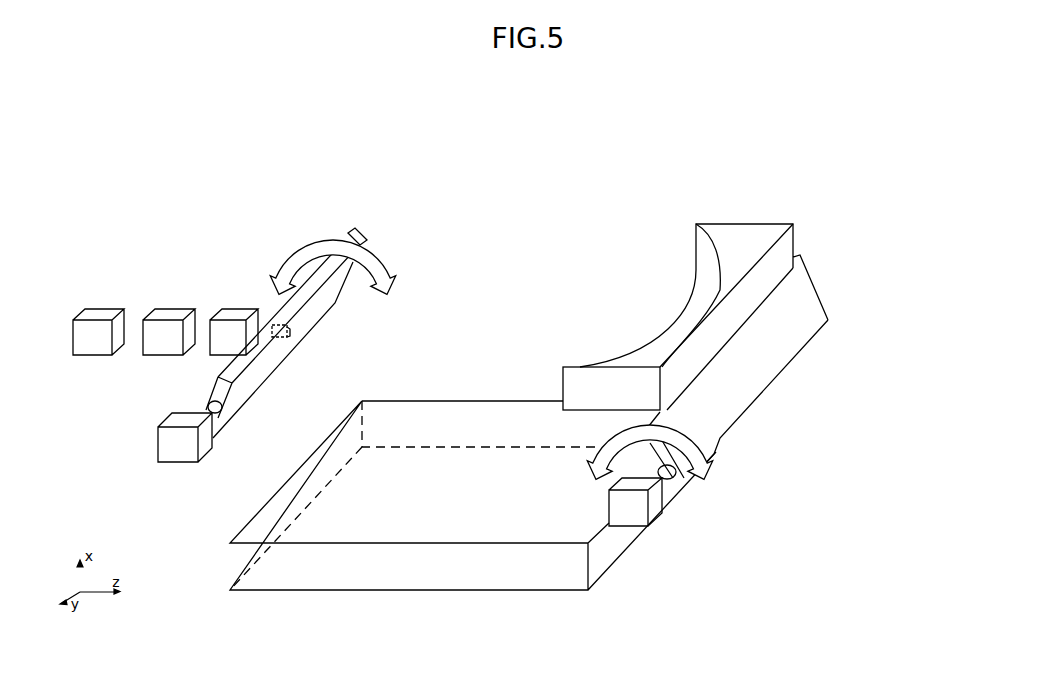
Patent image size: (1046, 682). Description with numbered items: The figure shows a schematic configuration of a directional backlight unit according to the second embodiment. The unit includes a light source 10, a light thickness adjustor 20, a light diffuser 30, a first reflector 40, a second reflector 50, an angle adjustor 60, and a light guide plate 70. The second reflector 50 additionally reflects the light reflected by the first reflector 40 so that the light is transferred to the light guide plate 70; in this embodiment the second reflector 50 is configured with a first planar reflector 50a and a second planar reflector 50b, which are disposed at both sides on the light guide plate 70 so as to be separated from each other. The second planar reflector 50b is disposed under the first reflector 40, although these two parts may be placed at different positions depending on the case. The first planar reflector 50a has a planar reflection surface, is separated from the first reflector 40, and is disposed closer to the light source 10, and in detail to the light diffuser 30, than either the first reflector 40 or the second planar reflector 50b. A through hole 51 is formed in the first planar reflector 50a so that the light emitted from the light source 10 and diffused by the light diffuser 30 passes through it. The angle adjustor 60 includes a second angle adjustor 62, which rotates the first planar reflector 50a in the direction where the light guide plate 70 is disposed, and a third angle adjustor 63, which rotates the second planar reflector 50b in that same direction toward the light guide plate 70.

The light source 10 is at (101, 315).
The light thickness adjustor 20 is at (171, 315).
The light diffuser 30 is at (236, 315).
The first reflector 40 is at (749, 230).
The second reflector 50 is at (498, 168).
The first planar reflector 50a is at (360, 228).
The second planar reflector 50b is at (735, 360).
The through hole 51 is at (290, 331).
The angle adjustor 60 is at (382, 627).
The second angle adjustor 62 is at (203, 440).
The third angle adjustor 63 is at (632, 506).
The light guide plate 70 is at (605, 560).